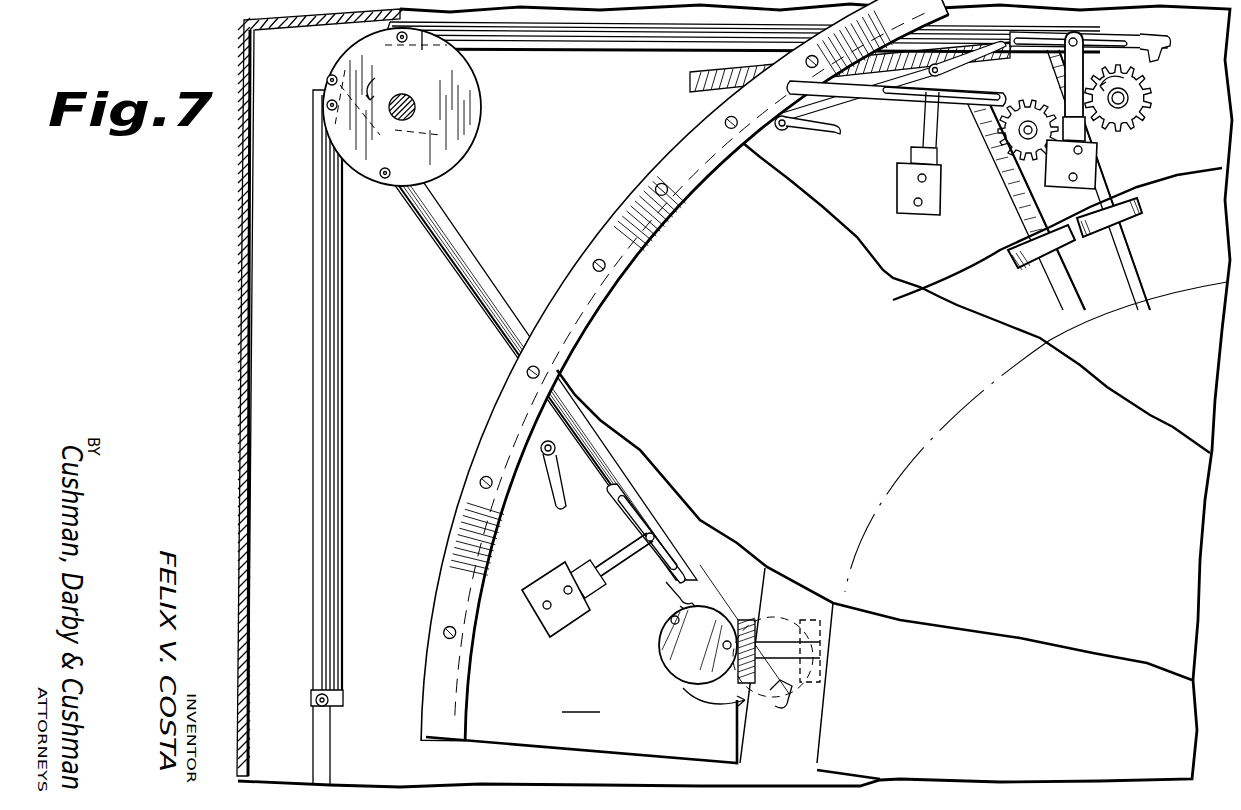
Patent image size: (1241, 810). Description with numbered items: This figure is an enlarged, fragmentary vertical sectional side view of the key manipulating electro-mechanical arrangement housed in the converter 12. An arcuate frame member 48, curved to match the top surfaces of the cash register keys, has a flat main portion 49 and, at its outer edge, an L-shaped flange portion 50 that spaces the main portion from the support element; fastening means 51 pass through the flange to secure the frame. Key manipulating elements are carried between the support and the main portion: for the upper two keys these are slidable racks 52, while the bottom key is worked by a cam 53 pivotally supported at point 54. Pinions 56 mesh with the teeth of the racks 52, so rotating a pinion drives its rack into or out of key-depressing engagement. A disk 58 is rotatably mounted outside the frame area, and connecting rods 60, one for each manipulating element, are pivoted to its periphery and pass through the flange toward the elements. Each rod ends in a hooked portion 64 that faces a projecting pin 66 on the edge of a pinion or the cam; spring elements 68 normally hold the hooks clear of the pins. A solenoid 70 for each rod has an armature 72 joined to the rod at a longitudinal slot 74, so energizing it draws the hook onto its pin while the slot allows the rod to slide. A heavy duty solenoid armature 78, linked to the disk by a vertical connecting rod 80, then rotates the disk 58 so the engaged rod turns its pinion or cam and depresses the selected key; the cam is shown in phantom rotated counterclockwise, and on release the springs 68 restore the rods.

The converter 12 is at (253, 574).
The arcuate frame member 48 is at (581, 701).
The flat main portion 49 is at (525, 742).
The L-shaped flange portion 50 is at (442, 538).
The fastening means 51 is at (432, 622).
The racks 52 is at (1108, 172).
The cam 53 is at (735, 664).
The pivot point 54 is at (702, 656).
The pinions 56 is at (960, 152).
The disk 58 is at (480, 140).
The connecting rods 60 is at (465, 256).
The hooked portions 64 is at (1030, 118).
The projecting pin 66 is at (630, 52).
The spring elements 68 is at (975, 52).
The solenoid 70 is at (922, 222).
The armatures 72 is at (1082, 36).
The longitudinal slots 74 is at (682, 556).
The armature 78 is at (332, 762).
The vertical connecting rod 80 is at (342, 438).